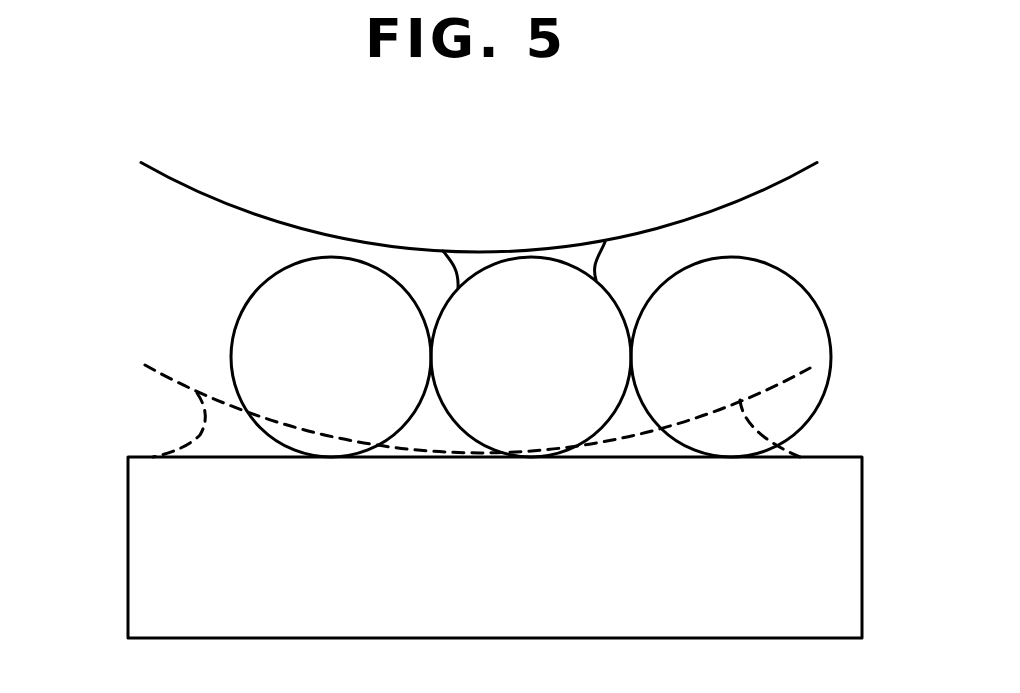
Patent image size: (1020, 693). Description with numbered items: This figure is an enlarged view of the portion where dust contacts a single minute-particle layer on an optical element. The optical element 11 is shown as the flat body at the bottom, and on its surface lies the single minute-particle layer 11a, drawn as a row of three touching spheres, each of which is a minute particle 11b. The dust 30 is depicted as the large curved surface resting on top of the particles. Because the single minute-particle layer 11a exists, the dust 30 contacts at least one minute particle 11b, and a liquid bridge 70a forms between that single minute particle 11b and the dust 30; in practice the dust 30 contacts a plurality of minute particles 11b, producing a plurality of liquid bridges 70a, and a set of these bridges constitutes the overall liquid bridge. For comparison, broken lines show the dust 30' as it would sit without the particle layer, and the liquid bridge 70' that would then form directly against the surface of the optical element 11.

The optical element 11 is at (158, 530).
The single minute-particle layer 11a is at (257, 333).
The minute particle 11b is at (598, 303).
The dust 30 is at (513, 207).
The pressing member (displaced position) 30' is at (431, 387).
The liquid bridge 70a is at (478, 260).
The liquid bridge 70' is at (433, 423).